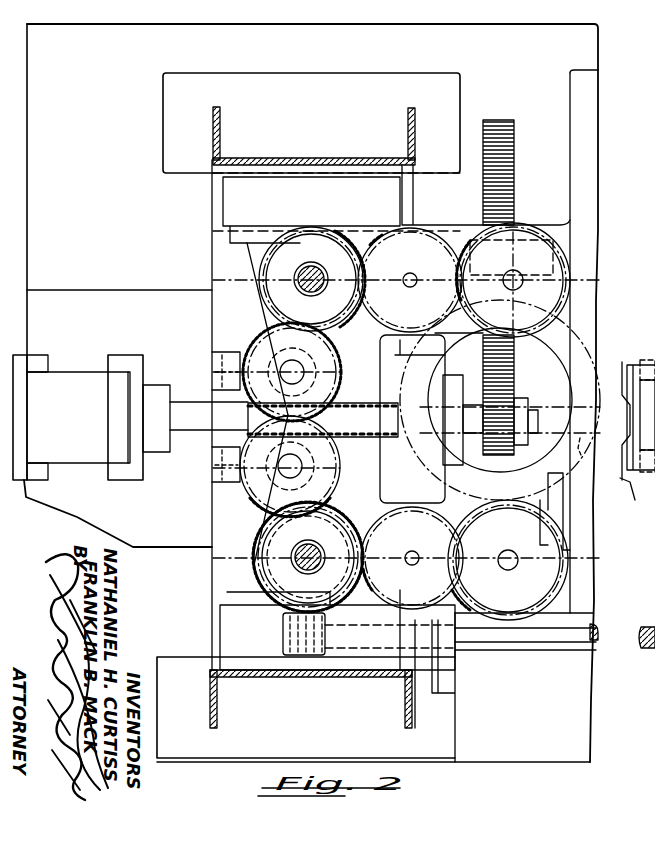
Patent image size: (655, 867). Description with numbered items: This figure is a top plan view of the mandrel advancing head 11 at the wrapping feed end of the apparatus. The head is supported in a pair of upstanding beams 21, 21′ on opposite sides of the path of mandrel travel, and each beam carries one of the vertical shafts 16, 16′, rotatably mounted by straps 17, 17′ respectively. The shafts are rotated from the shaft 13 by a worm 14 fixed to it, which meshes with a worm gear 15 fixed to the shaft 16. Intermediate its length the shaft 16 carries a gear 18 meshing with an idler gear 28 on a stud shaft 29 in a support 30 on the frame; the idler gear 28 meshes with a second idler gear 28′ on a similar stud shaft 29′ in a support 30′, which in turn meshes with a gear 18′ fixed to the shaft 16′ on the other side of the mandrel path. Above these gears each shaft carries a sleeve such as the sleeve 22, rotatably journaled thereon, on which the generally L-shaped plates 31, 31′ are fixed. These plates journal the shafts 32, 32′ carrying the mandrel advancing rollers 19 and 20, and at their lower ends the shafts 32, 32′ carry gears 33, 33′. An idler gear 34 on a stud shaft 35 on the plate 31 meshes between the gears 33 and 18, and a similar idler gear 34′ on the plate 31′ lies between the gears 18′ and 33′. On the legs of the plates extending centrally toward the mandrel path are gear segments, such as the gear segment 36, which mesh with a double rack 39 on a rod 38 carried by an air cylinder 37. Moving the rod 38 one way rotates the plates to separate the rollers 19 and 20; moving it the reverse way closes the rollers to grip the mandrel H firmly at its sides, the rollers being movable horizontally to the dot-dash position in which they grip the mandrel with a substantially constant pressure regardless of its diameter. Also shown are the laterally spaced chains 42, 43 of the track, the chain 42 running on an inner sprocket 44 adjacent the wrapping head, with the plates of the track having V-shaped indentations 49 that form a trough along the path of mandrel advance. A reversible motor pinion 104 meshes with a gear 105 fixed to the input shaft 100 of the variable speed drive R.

The mandrel advancing head 11 is at (618, 90).
The variable speed drive R is at (600, 162).
The upstanding beam 21′ is at (213, 127).
The upstanding beam 21 is at (208, 692).
The gear 105 is at (514, 140).
The pinion 104 is at (500, 452).
The input shaft 100 is at (523, 230).
The sleeve 22 is at (320, 262).
The vertical shaft 16′ is at (305, 264).
The vertical shaft 16 is at (318, 564).
The strap 17′ is at (255, 245).
The strap 17 is at (250, 598).
The idler gear 34′ is at (430, 232).
The idler gear 34 is at (412, 558).
The stud shaft 35 is at (418, 556).
The shaft 32′ is at (520, 287).
The shaft 32 is at (508, 568).
The gear 33′ is at (575, 235).
The gear 33 is at (575, 590).
The mandrel advancing roller 20 is at (555, 330).
The gear 18′ is at (355, 326).
The gear 18 is at (349, 481).
The idler gear 28′ is at (252, 338).
The idler gear 28 is at (268, 512).
The stud shaft 29′ is at (326, 372).
The stud shaft 29 is at (262, 500).
The support 30′ is at (212, 368).
The support 30 is at (212, 502).
The L-shaped plate 31′ is at (380, 360).
The L-shaped plate 31 is at (386, 492).
The gear segment 36 is at (380, 445).
The double rack 39 is at (323, 420).
The air cylinder 37 is at (75, 382).
The rod 38 is at (183, 432).
The worm gear 15 is at (280, 612).
The worm 14 is at (300, 660).
The shaft 13 is at (500, 652).
The mandrel advancing roller 19 is at (548, 478).
The mandrel H is at (580, 455).
The chain 42 is at (636, 470).
The chain 43 is at (622, 365).
The inner sprocket 44 is at (636, 501).
The V-shaped indentation 49 is at (622, 420).